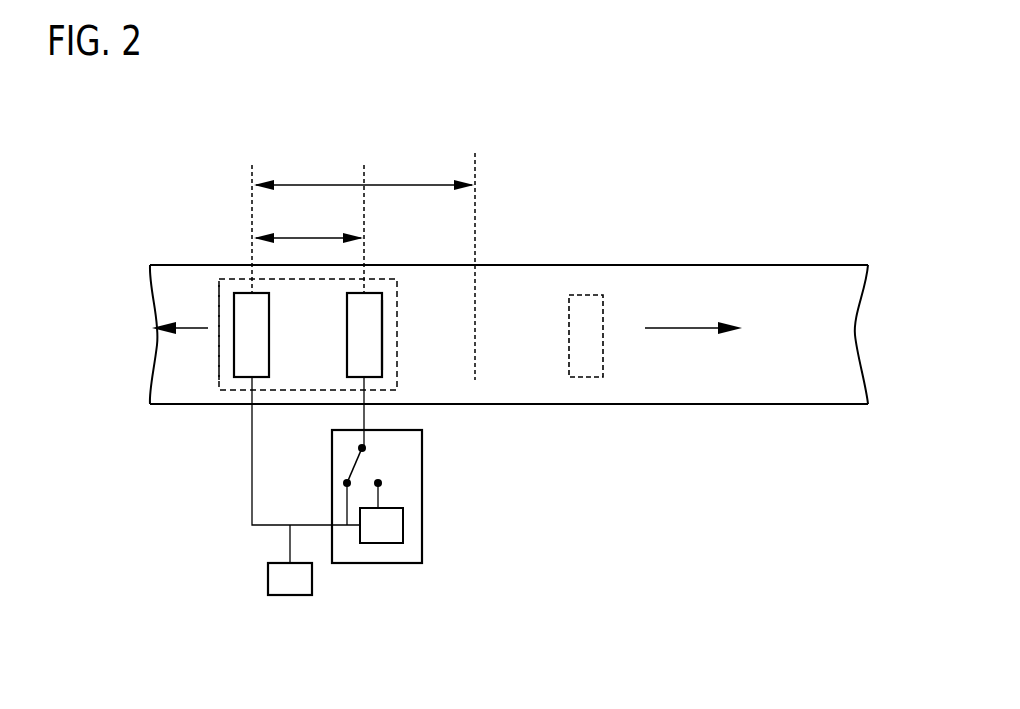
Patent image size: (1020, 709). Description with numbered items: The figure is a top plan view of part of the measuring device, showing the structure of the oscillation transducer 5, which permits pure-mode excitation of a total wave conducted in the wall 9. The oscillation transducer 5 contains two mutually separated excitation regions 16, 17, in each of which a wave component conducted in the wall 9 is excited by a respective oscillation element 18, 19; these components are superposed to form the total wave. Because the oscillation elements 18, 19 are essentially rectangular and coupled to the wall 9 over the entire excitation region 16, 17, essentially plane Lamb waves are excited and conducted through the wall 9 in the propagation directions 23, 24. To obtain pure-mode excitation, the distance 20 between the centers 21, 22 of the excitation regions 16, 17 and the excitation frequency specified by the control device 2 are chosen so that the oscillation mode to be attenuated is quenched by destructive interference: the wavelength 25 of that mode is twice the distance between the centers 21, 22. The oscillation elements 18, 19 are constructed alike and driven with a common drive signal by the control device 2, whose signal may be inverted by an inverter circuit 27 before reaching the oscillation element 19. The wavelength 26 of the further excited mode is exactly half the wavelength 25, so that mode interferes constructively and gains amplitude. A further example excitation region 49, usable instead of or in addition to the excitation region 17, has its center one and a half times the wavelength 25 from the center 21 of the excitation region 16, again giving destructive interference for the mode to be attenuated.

The control device 2 is at (312, 590).
The oscillation transducer 5 is at (232, 392).
The wall 9 is at (697, 275).
The excitation region 16 is at (218, 301).
The excitation region 17 is at (387, 337).
The oscillation element 18 is at (240, 293).
The oscillation element 19 is at (347, 333).
The distance 20 is at (308, 217).
The wavelength 26 is at (313, 237).
The center 21 is at (250, 178).
The center 22 is at (366, 172).
The propagation direction 23 is at (685, 331).
The propagation direction 24 is at (192, 331).
The wavelength 25 is at (413, 184).
The inverter circuit 27 is at (422, 505).
The excitation region 49 is at (584, 378).